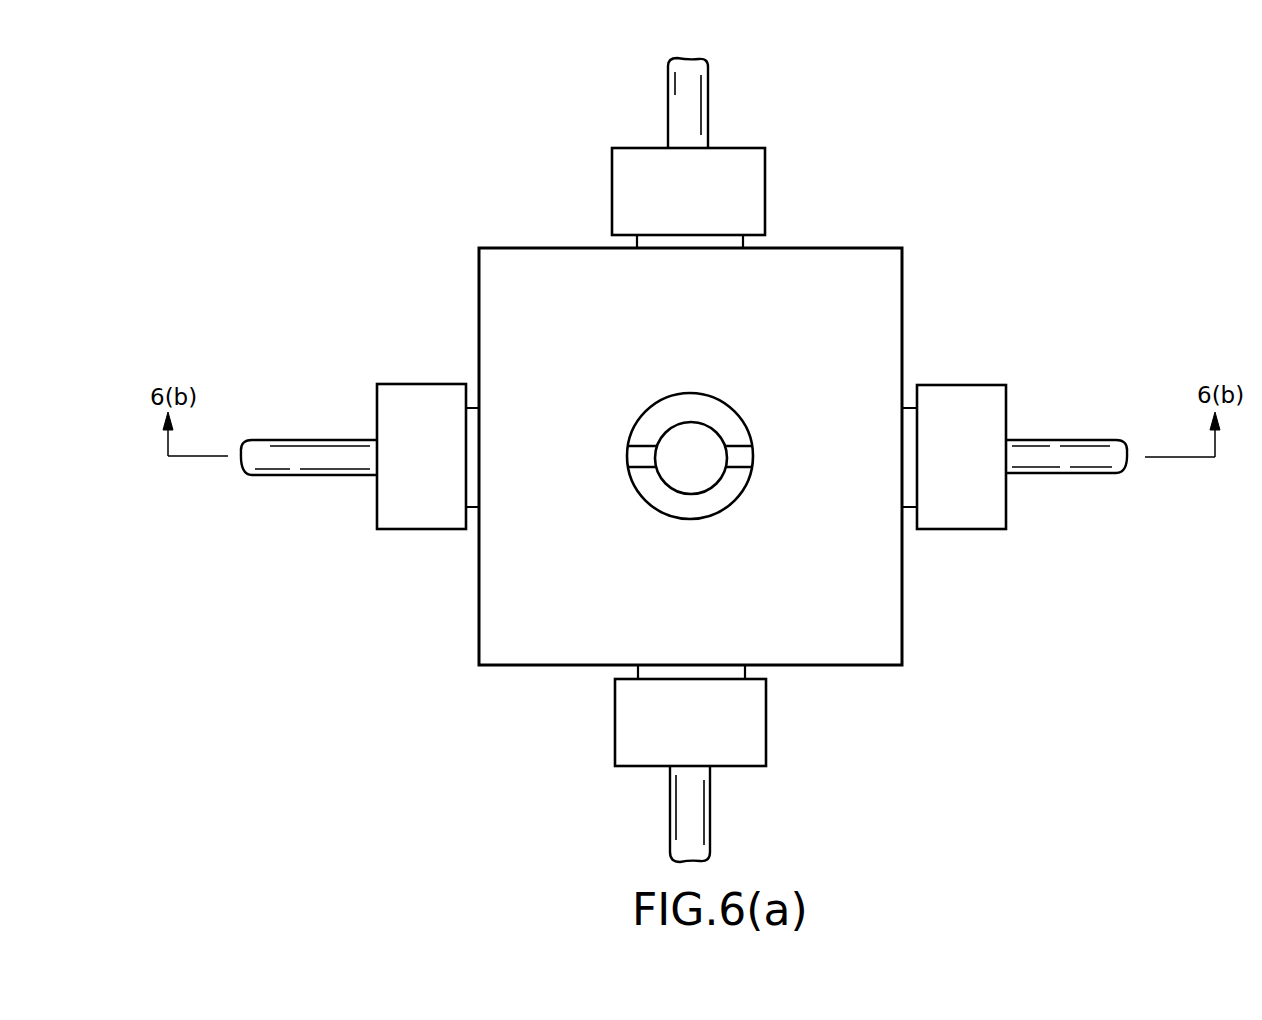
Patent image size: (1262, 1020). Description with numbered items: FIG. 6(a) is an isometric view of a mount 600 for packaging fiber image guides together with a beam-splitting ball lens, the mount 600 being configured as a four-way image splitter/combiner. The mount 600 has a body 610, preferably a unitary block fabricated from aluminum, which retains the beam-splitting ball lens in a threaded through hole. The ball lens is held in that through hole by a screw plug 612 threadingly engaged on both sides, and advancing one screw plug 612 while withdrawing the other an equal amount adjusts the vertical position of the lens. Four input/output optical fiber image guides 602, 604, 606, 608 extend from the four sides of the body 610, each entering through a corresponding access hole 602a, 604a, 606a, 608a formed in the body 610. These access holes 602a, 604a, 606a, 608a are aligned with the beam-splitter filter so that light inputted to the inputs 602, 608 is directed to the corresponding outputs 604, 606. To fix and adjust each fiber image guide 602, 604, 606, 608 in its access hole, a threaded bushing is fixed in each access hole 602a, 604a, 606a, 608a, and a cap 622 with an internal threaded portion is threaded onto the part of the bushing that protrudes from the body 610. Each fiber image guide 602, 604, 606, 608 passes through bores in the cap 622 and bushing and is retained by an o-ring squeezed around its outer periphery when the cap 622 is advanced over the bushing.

The mount 600 is at (987, 192).
The optical fiber image guide 602 is at (1057, 440).
The access hole 602a is at (903, 510).
The optical fiber image guide 604 is at (708, 82).
The access hole 604a is at (750, 247).
The optical fiber image guide 606 is at (305, 440).
The access hole 606a is at (479, 405).
The optical fiber image guide 608 is at (710, 800).
The access hole 608a is at (630, 667).
The body 610 is at (902, 305).
The screw plug 612 is at (642, 498).
The cap 622 is at (765, 155).